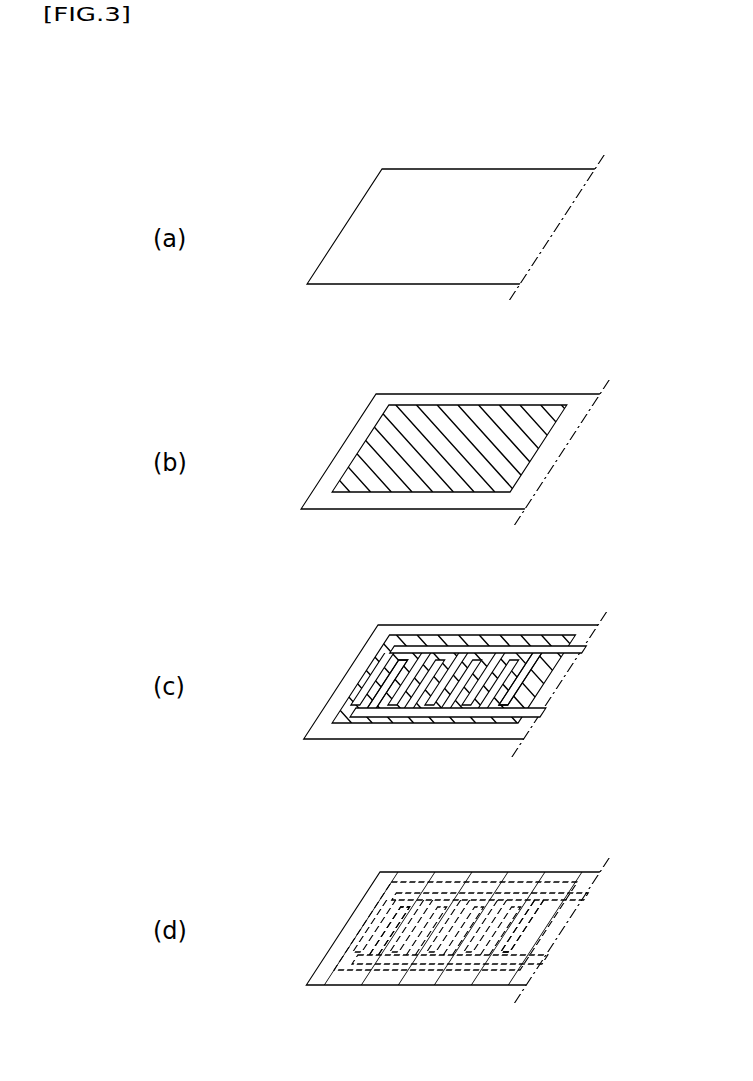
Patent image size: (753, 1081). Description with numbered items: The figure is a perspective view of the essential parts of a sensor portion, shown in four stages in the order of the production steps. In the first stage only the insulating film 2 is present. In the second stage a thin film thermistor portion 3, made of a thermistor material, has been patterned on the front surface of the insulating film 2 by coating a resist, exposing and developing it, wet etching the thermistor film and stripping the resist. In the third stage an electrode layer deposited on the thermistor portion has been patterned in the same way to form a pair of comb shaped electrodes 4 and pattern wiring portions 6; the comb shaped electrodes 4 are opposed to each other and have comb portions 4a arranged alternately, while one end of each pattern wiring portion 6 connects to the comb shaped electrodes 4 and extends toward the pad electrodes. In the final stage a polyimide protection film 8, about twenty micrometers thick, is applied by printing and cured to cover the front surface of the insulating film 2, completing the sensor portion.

The insulating film 2 is at (535, 169).
The thin film thermistor portion 3 is at (481, 407).
The comb shaped electrodes 4 is at (505, 645).
The comb portions 4a is at (390, 687).
The pattern wiring portions 6 is at (588, 640).
The protection film 8 is at (423, 877).